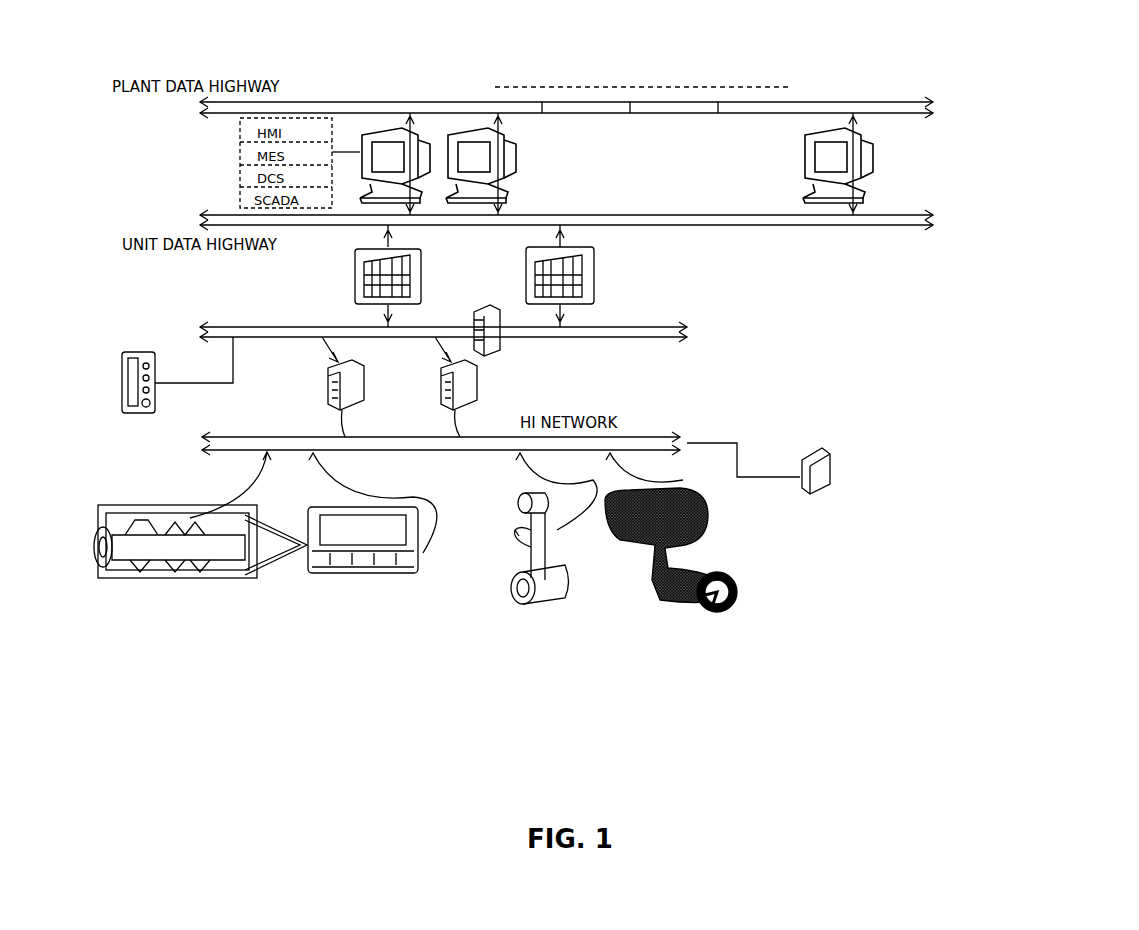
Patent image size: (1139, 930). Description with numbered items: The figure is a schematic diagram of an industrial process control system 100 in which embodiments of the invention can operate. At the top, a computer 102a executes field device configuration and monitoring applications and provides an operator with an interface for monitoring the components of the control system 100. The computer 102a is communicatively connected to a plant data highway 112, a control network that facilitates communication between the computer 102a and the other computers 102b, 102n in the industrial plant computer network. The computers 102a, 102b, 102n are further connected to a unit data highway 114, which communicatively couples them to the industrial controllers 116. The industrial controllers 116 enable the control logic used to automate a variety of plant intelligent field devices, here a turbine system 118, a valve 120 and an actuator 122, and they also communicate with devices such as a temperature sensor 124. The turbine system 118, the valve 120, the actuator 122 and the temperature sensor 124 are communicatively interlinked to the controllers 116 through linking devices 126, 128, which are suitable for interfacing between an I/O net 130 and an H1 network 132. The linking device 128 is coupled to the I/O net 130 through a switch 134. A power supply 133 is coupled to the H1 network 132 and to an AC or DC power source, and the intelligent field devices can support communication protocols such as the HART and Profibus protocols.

The industrial process control system 100 is at (1040, 100).
The computer 102a is at (365, 130).
The computer 102b is at (455, 130).
The computer 102n is at (820, 130).
The plant data highway 112 is at (935, 101).
The unit data highway 114 is at (935, 216).
The industrial controller 116 is at (422, 282).
The turbine system 118 is at (228, 585).
The valve 120 is at (548, 590).
The actuator 122 is at (742, 596).
The temperature sensor 124 is at (385, 578).
The linking device 126 is at (364, 384).
The linking device 128 is at (477, 384).
The I/O net 130 is at (690, 334).
The H1 network 132 is at (690, 437).
The power supply 133 is at (830, 464).
The switch 134 is at (500, 350).